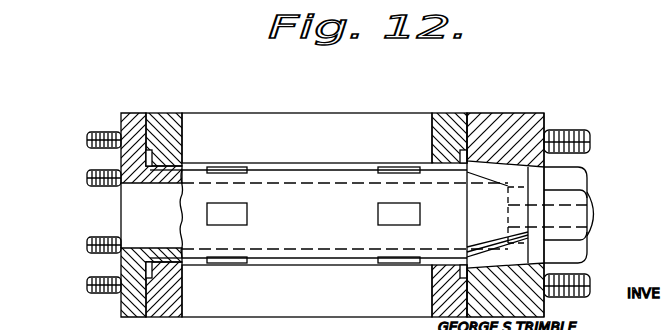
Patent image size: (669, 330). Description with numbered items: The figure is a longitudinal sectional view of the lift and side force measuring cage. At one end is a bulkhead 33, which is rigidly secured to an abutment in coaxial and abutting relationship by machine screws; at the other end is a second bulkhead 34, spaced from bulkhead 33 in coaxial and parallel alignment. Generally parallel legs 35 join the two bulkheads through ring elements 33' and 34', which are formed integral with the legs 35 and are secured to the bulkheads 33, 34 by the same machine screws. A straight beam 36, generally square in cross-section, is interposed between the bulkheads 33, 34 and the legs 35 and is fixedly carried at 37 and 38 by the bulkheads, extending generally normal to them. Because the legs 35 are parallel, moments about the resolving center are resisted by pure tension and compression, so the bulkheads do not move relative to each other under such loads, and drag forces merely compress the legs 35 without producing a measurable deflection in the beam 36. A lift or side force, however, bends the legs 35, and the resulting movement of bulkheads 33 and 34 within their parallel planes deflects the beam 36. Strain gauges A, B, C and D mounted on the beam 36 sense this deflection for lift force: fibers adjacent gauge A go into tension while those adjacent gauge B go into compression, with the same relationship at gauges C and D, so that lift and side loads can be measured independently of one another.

The bulkhead 33 is at (122, 210).
The ring element 33' is at (172, 196).
The bulkhead 34 is at (515, 201).
The ring element 34' is at (466, 196).
The legs 35 is at (348, 102).
The straight beam 36 is at (332, 229).
The beam fixing point 37 is at (121, 166).
The beam fixing point 38 is at (590, 134).
The strain gauge A is at (230, 168).
The strain gauge B is at (394, 160).
The strain gauge C is at (230, 264).
The strain gauge D is at (386, 264).